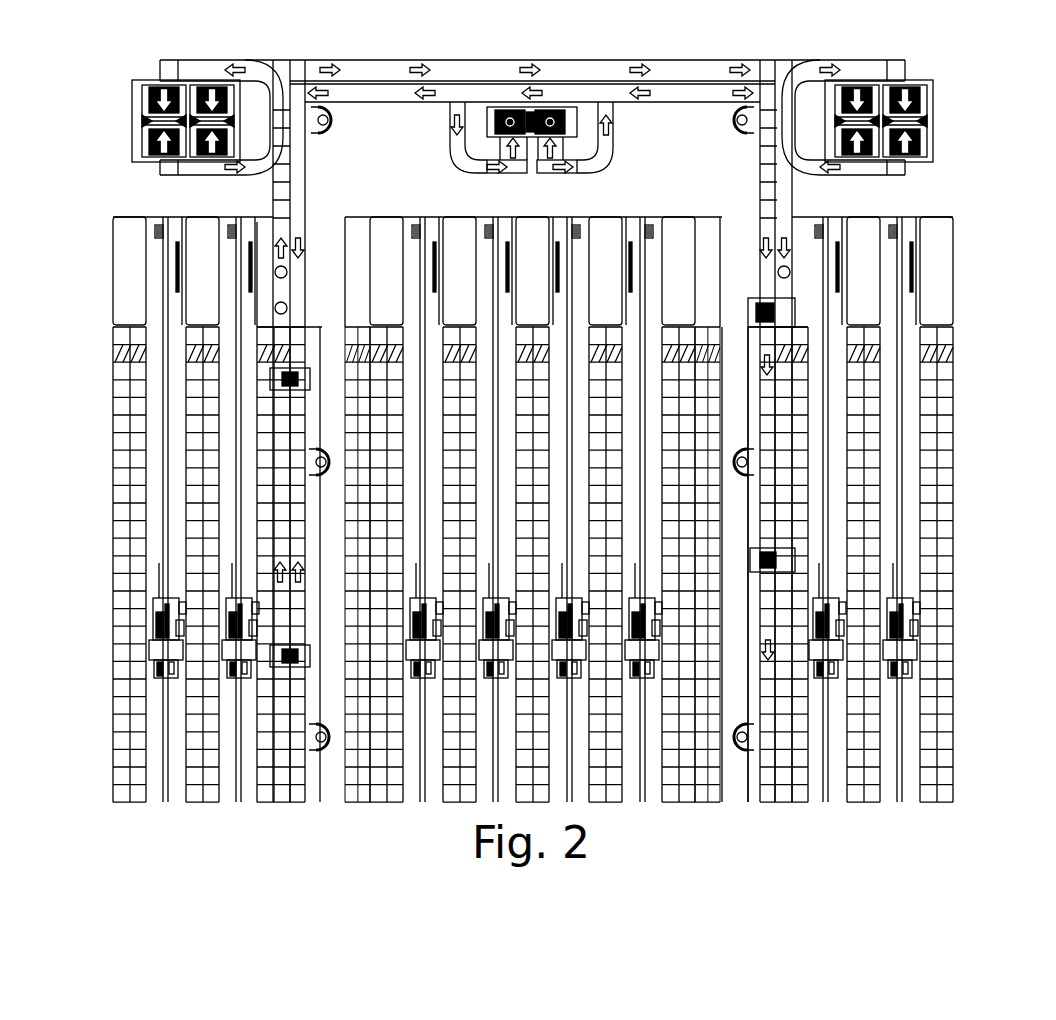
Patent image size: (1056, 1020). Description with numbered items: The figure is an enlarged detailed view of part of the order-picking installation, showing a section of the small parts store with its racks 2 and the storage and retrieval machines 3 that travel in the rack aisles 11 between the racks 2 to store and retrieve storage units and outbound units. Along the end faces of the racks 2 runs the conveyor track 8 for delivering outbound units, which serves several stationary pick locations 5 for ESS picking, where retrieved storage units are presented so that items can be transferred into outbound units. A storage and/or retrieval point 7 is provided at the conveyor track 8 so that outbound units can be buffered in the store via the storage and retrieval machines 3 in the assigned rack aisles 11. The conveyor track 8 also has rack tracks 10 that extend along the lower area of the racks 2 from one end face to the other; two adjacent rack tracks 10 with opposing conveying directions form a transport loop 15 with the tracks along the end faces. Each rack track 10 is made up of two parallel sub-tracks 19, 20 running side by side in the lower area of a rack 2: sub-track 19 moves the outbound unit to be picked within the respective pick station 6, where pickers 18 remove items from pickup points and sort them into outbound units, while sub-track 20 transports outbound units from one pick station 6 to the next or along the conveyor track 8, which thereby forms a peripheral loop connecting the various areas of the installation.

The rack 2 is at (943, 580).
The storage and retrieval machine 3 is at (162, 648).
The pick location 5 is at (313, 108).
The pick station 6 is at (287, 400).
The storage and/or retrieval point 7 is at (570, 108).
The conveyor track 8 is at (493, 65).
The rack track 10 is at (776, 200).
The rack aisle 11 is at (903, 373).
The transport loop 15 is at (752, 165).
The picker 18 is at (326, 112).
The sub-track 19 is at (275, 560).
The sub-track 20 is at (265, 546).